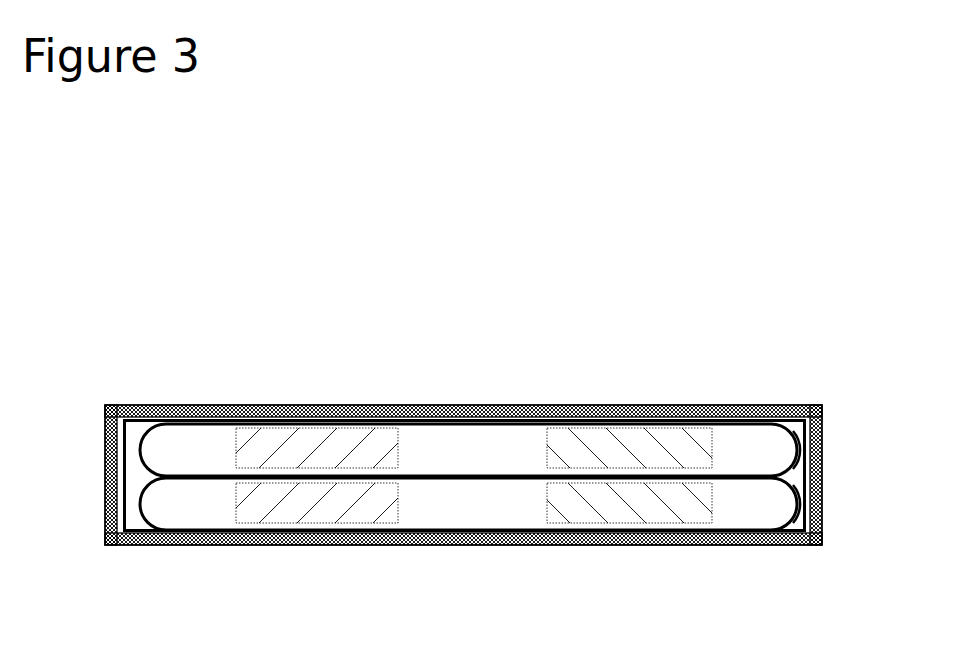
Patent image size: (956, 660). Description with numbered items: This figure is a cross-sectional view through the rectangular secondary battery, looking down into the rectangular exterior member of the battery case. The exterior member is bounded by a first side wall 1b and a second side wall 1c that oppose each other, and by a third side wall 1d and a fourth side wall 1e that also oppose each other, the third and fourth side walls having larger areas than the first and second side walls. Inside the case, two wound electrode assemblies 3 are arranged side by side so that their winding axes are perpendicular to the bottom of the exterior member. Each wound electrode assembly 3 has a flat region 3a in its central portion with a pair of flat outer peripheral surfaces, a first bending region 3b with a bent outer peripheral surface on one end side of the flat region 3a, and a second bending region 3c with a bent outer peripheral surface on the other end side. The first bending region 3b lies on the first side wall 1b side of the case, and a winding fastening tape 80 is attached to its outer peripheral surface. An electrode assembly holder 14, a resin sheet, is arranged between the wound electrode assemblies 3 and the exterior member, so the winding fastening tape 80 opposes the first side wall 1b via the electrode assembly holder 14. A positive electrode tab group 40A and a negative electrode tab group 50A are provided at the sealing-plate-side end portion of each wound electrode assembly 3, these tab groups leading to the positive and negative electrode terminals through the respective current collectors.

The first side wall 1b is at (823, 443).
The second side wall 1c is at (104, 467).
The third side wall 1d is at (470, 545).
The fourth side wall 1e is at (420, 405).
The electrode assembly holder 14 is at (823, 507).
The wound electrode assembly 3 is at (464, 473).
The flat region 3a is at (462, 437).
The first bending region 3b is at (783, 448).
The second bending region 3c is at (153, 447).
The positive electrode tab group 40A is at (623, 445).
The negative electrode tab group 50A is at (300, 450).
The winding fastening tape 80 is at (799, 422).